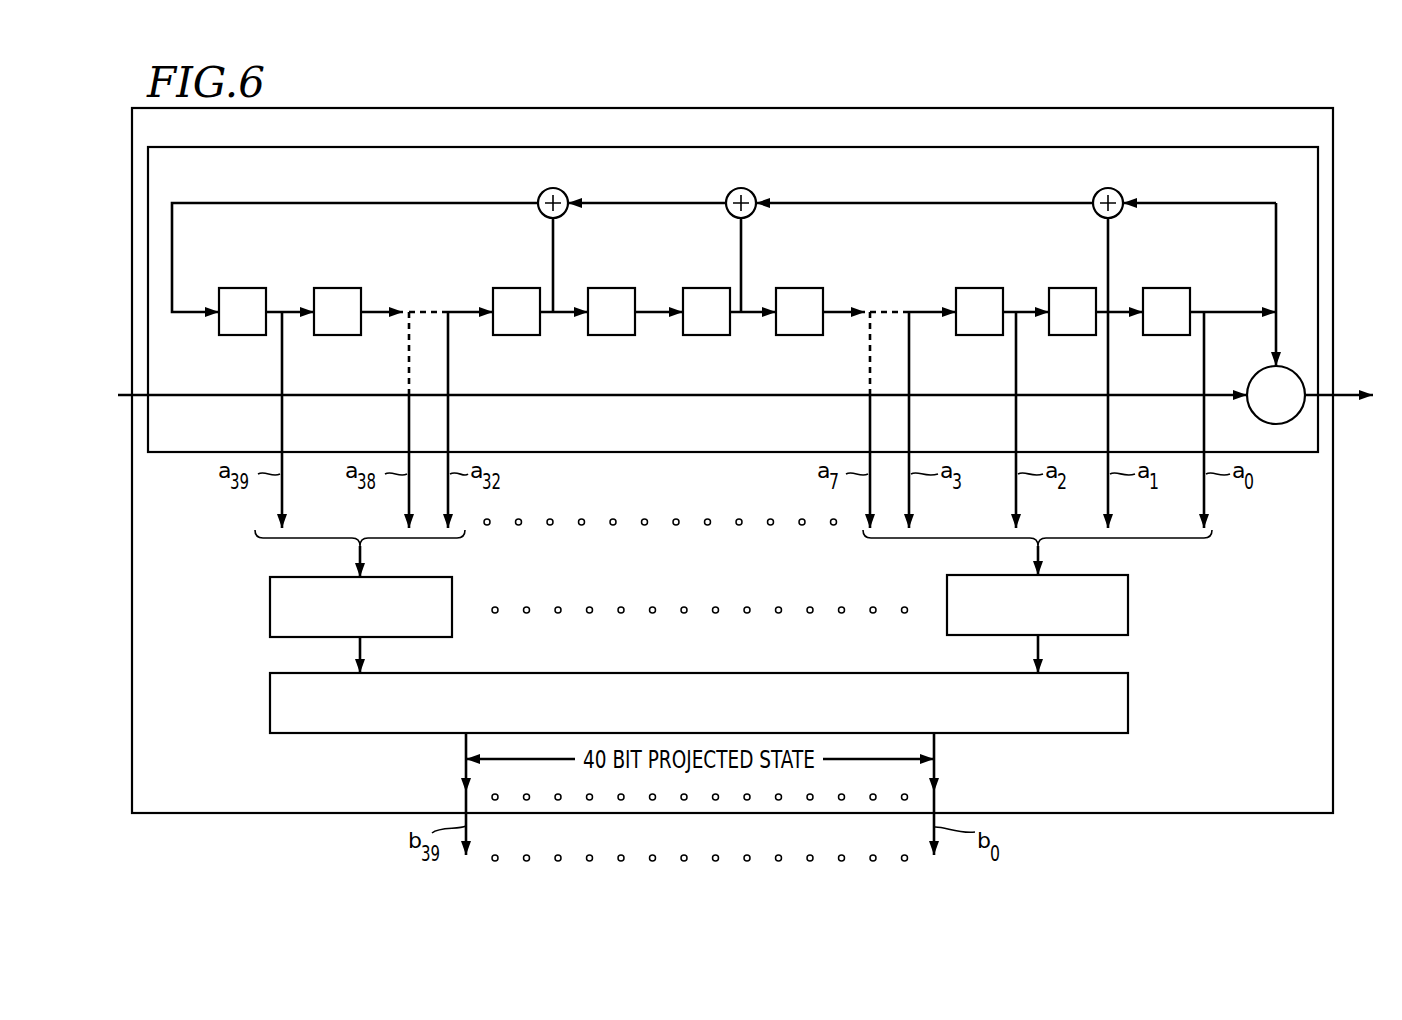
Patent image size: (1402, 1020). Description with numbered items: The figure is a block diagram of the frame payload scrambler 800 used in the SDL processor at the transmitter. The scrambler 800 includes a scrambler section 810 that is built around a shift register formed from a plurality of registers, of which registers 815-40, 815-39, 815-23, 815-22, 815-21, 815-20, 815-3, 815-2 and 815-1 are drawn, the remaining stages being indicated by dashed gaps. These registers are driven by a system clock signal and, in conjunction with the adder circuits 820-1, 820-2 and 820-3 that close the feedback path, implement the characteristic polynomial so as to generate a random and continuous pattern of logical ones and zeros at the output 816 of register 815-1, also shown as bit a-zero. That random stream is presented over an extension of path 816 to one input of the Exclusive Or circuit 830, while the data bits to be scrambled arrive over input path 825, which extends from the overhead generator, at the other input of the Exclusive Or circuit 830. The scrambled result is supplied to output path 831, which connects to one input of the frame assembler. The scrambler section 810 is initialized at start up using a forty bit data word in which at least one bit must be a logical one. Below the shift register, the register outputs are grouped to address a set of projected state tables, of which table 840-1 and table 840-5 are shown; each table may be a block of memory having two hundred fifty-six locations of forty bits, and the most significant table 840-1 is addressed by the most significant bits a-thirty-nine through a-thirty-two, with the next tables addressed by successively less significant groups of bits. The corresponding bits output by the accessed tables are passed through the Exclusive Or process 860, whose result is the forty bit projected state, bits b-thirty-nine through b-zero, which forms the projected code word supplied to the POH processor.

The frame payload scrambler 800 is at (700, 108).
The scrambler section 810 is at (700, 147).
The register 815-40 is at (240, 288).
The register 815-39 is at (335, 288).
The register 815-23 is at (514, 288).
The register 815-22 is at (609, 288).
The register 815-21 is at (704, 288).
The register 815-20 is at (797, 288).
The register 815-3 is at (977, 288).
The register 815-2 is at (1070, 288).
The register 815-1 is at (1164, 288).
The output path of register 816 is at (1240, 310).
The adder circuit 820-1 is at (565, 194).
The adder circuit 820-2 is at (753, 194).
The adder circuit 820-3 is at (1120, 194).
The input path 825 is at (630, 395).
The Exclusive Or circuit 830 is at (1255, 375).
The output path 831 is at (1352, 393).
The projected state table 840-1 is at (270, 590).
The projected state table 840-5 is at (1128, 588).
The Exclusive Or process 860 is at (270, 688).